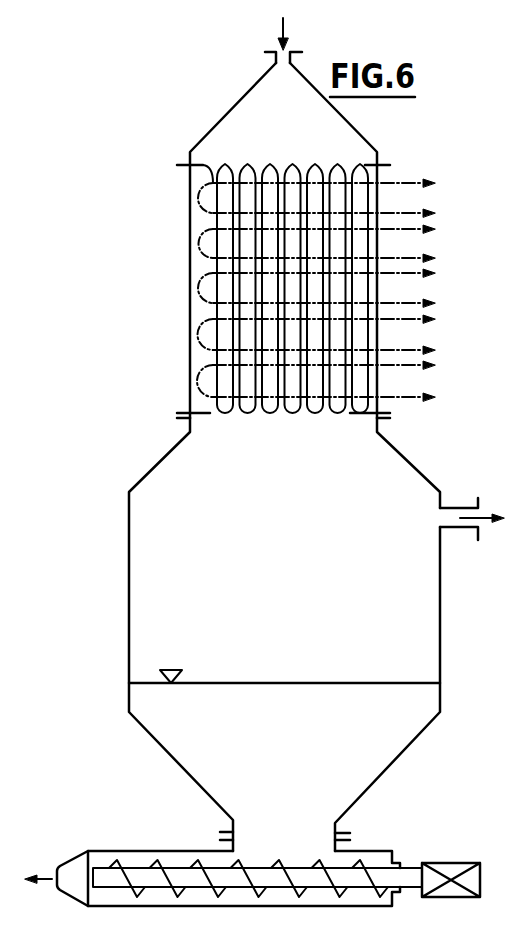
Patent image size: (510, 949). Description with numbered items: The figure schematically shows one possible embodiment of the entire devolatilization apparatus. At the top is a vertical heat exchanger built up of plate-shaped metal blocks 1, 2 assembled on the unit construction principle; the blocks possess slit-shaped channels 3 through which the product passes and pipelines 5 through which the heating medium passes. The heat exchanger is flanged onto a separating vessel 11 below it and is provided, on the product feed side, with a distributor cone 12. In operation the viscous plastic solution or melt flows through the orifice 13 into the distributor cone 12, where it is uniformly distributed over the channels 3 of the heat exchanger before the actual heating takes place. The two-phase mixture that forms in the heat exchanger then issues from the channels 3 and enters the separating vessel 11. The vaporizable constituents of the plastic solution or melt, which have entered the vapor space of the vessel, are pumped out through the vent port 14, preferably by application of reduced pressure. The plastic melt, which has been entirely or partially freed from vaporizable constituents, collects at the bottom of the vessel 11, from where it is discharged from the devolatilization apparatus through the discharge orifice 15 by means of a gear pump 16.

The plate-shaped metal block 1 is at (225, 245).
The plate-shaped metal block 2 is at (368, 197).
The slit-shaped channels 3 is at (228, 339).
The pipelines 5 is at (432, 197).
The separating vessel 11 is at (128, 532).
The distributor cone 12 is at (228, 108).
The orifice 13 is at (293, 37).
The vent port 14 is at (487, 502).
The discharge orifice 15 is at (320, 830).
The gear pump 16 is at (135, 851).